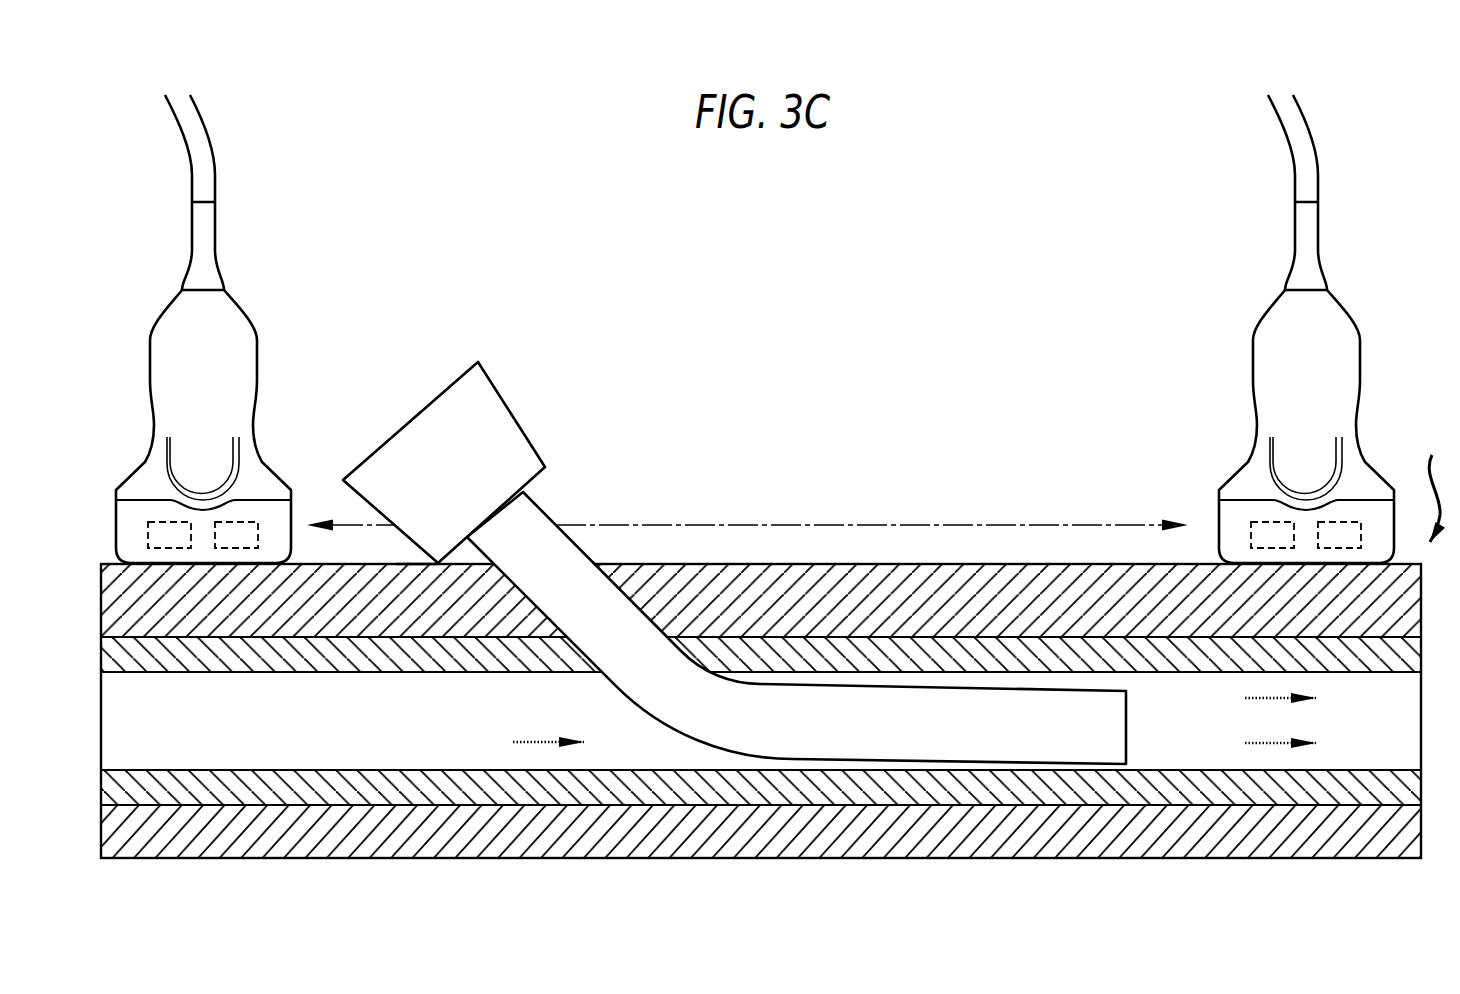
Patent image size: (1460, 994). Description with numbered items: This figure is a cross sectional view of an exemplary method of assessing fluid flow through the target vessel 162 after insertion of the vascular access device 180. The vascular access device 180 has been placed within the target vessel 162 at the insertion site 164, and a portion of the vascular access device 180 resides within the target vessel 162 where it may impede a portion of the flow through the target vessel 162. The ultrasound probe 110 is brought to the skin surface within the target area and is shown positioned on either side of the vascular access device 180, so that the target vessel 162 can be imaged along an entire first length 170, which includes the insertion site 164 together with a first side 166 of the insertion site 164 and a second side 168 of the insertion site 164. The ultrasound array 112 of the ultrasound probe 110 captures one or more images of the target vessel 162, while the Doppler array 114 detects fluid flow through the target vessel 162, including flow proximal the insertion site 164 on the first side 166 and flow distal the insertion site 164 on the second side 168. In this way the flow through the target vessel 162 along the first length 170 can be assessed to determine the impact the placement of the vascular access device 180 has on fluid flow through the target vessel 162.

The ultrasound probe 110 is at (257, 366).
The ultrasound array 112 is at (163, 538).
The Doppler array 114 is at (243, 534).
The target vessel 162 is at (480, 727).
The insertion site 164 is at (652, 561).
The first side 166 is at (416, 559).
The second side 168 is at (1438, 486).
The first length 170 is at (795, 525).
The vascular access device 180 is at (503, 400).